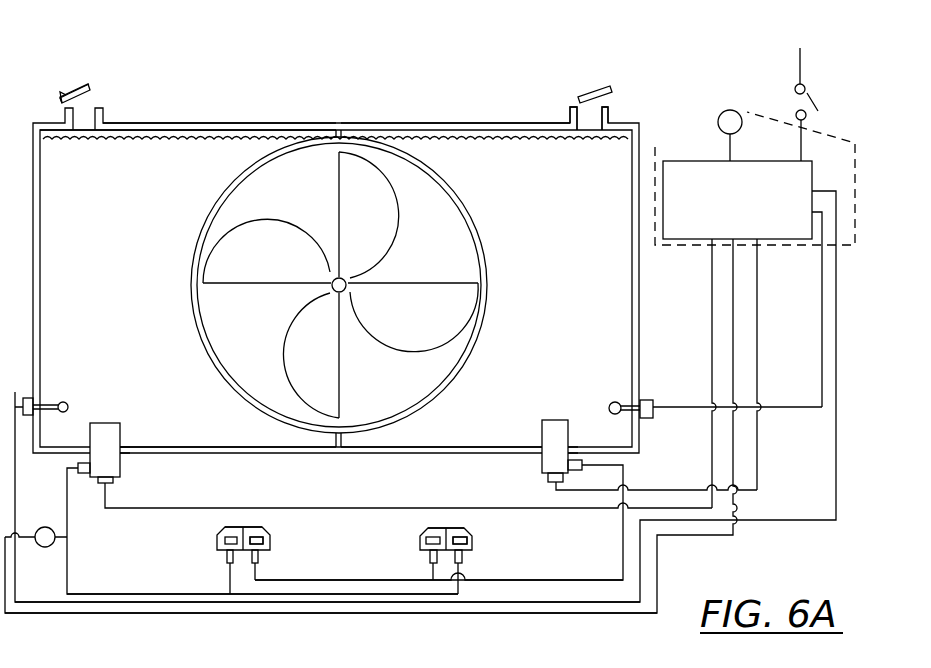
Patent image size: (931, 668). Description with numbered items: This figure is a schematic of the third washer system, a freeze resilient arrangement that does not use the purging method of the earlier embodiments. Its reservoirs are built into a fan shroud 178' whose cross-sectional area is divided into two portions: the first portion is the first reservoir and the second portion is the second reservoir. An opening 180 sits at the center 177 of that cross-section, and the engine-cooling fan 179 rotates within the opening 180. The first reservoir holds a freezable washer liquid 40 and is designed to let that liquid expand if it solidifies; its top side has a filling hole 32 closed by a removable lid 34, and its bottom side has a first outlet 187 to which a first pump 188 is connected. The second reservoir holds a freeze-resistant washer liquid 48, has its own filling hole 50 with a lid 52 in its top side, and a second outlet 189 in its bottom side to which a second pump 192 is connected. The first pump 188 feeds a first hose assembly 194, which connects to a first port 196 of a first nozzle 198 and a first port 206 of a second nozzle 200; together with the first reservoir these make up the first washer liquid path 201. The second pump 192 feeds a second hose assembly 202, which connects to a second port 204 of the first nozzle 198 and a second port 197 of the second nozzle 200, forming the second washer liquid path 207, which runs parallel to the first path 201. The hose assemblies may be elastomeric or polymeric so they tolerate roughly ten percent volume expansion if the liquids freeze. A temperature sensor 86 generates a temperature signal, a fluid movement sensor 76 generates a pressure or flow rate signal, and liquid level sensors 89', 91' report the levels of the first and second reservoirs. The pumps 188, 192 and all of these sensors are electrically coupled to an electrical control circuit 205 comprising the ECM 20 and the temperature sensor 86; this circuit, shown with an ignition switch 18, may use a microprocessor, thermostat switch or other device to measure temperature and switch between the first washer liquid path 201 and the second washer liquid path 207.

The ignition switch 18 is at (818, 98).
The ECM 20 is at (700, 160).
The filling hole 32 is at (88, 105).
The removable lid 34 is at (82, 83).
The freezable washer liquid 40 is at (127, 147).
The freeze-resistant washer liquid 48 is at (625, 127).
The filling hole 50 is at (587, 118).
The lid 52 is at (600, 83).
The fluid movement sensor 76 is at (67, 535).
The temperature sensor 86 is at (767, 92).
The liquid level sensor 89' is at (54, 369).
The liquid level sensor 91' is at (715, 383).
The center 177 is at (325, 249).
The fan shroud 178' is at (381, 262).
The engine-cooling fan 179 is at (343, 170).
The opening 180 is at (450, 185).
The first outlet 187 is at (123, 447).
The first pump 188 is at (102, 430).
The second outlet 189 is at (572, 447).
The second pump 192 is at (548, 433).
The first hose assembly 194 is at (162, 593).
The first port 196 is at (225, 542).
The second port 197 is at (420, 538).
The first nozzle 198 is at (250, 508).
The second nozzle 200 is at (447, 528).
The first washer liquid path 201 is at (43, 580).
The second hose assembly 202 is at (587, 570).
The second port 204 is at (267, 537).
The electrical control circuit 205 is at (763, 247).
The first port 206 is at (470, 533).
The second washer liquid path 207 is at (532, 543).